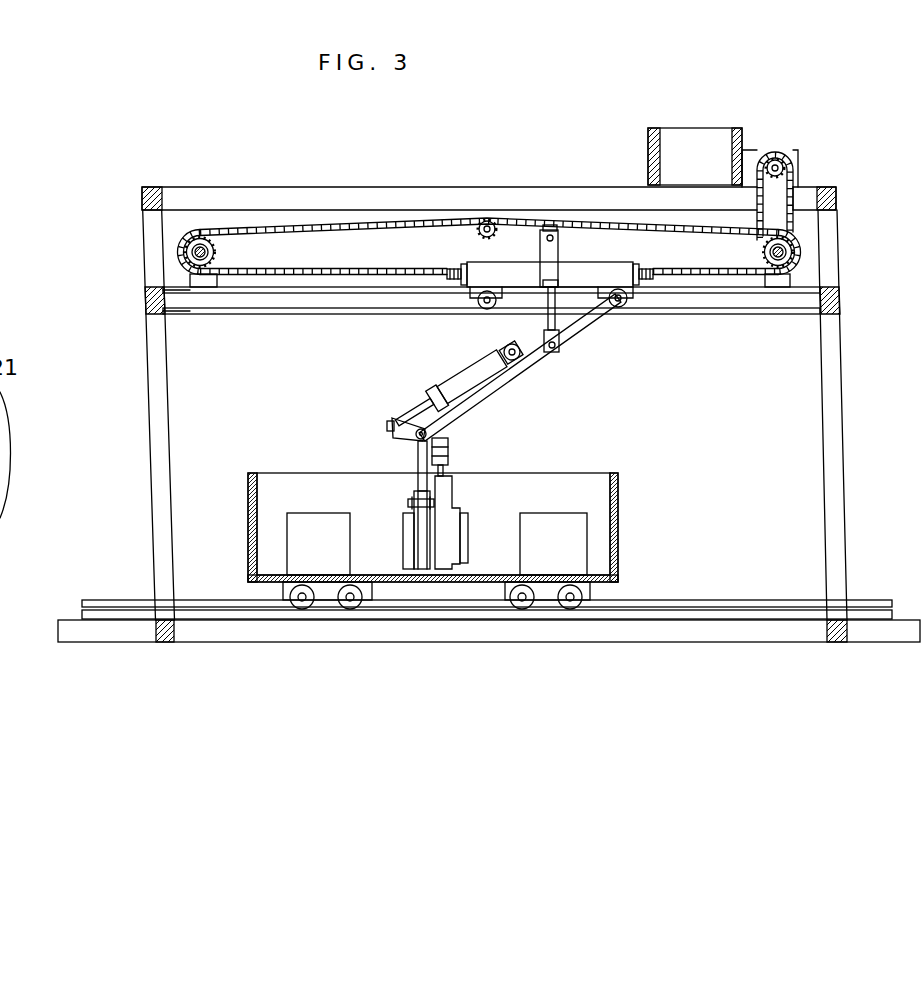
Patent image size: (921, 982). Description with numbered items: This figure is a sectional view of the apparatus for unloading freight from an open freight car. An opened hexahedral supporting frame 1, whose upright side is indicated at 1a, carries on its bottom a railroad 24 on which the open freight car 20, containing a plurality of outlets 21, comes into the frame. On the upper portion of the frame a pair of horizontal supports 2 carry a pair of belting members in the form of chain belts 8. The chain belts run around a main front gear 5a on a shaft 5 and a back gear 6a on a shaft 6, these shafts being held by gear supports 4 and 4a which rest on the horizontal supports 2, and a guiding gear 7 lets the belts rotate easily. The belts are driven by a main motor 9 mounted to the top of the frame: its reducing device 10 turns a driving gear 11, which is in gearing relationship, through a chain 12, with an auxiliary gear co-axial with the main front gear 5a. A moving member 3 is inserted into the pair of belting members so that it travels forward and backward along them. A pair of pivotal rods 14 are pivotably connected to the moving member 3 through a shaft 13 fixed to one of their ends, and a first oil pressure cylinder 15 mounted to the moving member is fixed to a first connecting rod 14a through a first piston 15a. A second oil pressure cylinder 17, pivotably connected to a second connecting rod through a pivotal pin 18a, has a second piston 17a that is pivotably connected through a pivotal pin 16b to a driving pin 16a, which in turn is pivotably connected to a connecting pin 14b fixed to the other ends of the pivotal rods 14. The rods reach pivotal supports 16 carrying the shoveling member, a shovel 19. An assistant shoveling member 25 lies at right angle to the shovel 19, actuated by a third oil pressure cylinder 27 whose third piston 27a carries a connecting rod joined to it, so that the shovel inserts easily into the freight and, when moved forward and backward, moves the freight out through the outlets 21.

The supporting frame 1 is at (160, 443).
The left frame post 1a is at (155, 268).
The horizontal support 2 is at (790, 330).
The moving member 3 is at (593, 268).
The gear support 4 is at (793, 277).
The gear support 4a is at (203, 285).
The shaft 5 is at (803, 250).
The main front gear 5a is at (790, 233).
The shaft 6 is at (143, 312).
The back gear 6a is at (185, 243).
The guiding gear 7 is at (492, 220).
The chain belt 8 is at (410, 210).
The main motor 9 is at (695, 145).
The reducing device 10 is at (753, 152).
The driving gear 11 is at (788, 152).
The chain 12 is at (795, 202).
The shaft 13 is at (643, 302).
The pivotal rod 14 is at (588, 325).
The first connecting rod 14a is at (557, 355).
The connecting pin 14b is at (413, 490).
The first oil pressure cylinder 15 is at (555, 252).
The first piston 15a is at (545, 300).
The pivotal support 16 is at (420, 447).
The driving pin 16a is at (407, 413).
The pivotal pin 16b is at (393, 430).
The second oil pressure cylinder 17 is at (472, 373).
The second piston 17a is at (433, 398).
The pivotal pin 18a is at (508, 368).
The shovel 19 is at (408, 550).
The open freight car 20 is at (603, 522).
The outlet 21 is at (578, 557).
The railroad 24 is at (725, 600).
The assistant shoveling member 25 is at (447, 552).
The third oil pressure cylinder 27 is at (448, 445).
The third piston 27a is at (447, 473).